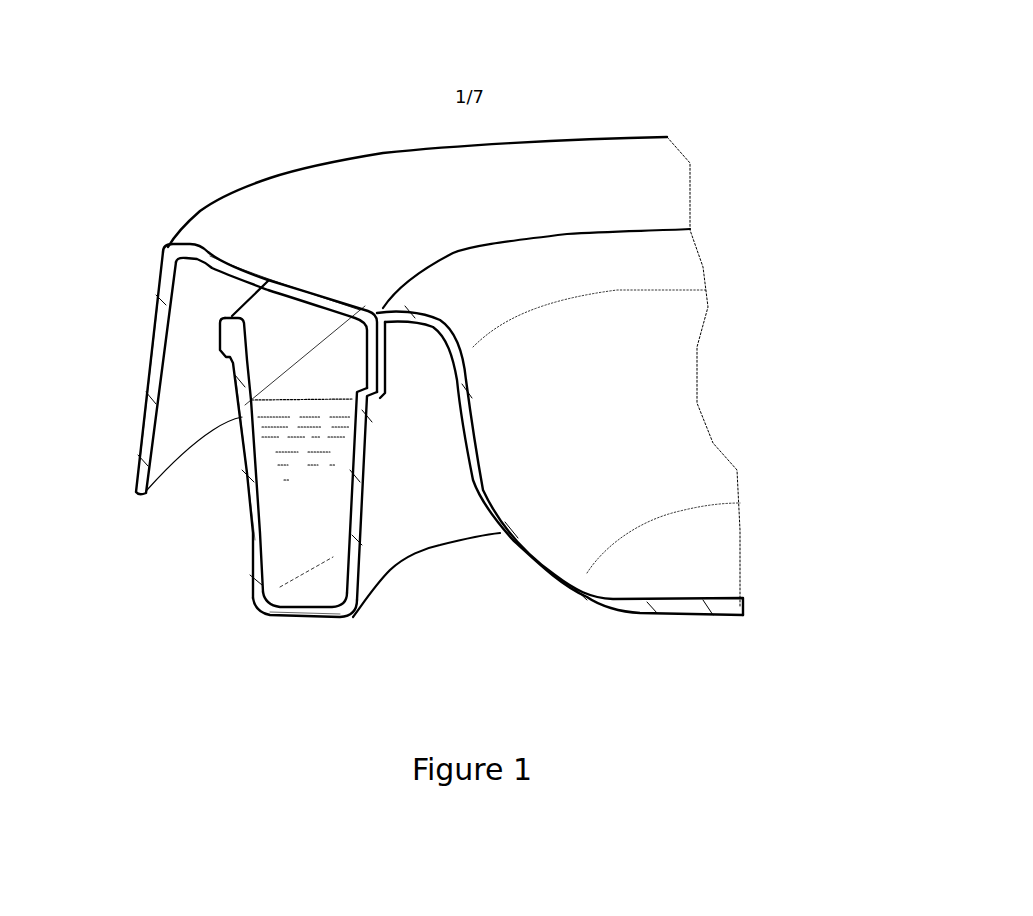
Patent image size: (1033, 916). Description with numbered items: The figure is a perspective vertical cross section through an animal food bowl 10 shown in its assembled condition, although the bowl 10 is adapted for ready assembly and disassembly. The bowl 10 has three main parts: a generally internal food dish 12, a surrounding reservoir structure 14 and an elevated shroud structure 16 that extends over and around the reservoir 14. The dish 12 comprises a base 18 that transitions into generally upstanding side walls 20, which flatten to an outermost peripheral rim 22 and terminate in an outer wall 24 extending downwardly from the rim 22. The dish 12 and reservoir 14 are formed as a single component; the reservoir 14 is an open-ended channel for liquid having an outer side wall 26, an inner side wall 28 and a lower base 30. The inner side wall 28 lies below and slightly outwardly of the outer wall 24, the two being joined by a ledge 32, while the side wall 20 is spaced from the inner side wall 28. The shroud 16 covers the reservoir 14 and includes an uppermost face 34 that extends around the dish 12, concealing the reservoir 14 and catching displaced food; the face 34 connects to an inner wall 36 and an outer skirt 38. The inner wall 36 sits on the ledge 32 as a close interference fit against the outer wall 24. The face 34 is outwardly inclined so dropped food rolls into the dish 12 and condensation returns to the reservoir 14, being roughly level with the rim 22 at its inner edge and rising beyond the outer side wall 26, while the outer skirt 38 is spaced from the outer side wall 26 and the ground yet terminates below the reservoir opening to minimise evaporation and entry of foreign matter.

The animal food bowl 10 is at (547, 110).
The food dish 12 is at (689, 476).
The reservoir structure 14 is at (289, 560).
The shroud structure 16 is at (288, 228).
The base 18 is at (685, 577).
The side walls 20 is at (567, 460).
The peripheral rim 22 is at (440, 291).
The outer wall 24 is at (403, 358).
The outer side wall 26 is at (257, 491).
The inner side wall 28 is at (372, 463).
The lower base 30 is at (300, 612).
The ledge 32 is at (380, 398).
The uppermost face 34 is at (300, 286).
The inner wall 36 is at (363, 345).
The outer skirt 38 is at (163, 442).